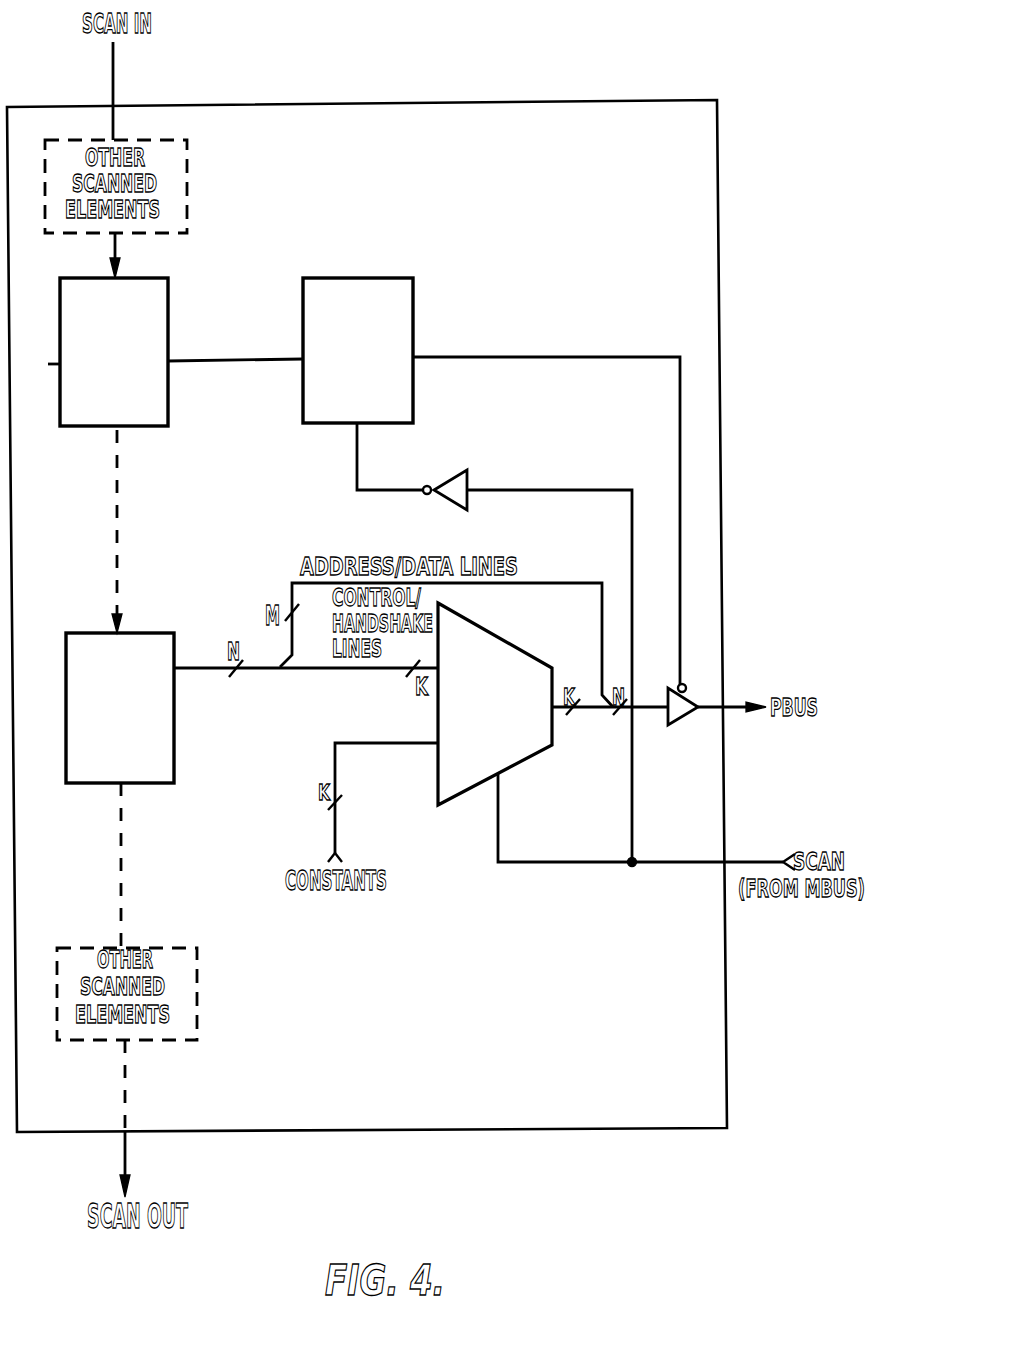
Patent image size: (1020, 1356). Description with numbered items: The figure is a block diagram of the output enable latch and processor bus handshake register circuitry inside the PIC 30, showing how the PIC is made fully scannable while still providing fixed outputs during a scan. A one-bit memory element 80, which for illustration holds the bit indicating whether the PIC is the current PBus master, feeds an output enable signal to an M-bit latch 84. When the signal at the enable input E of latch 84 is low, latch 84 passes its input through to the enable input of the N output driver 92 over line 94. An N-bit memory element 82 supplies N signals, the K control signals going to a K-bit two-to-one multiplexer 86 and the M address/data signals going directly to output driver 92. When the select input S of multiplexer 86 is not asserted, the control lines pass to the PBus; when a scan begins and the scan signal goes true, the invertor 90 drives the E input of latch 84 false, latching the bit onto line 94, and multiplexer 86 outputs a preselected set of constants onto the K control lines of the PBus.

The PIC 30 is at (727, 1080).
The one-bit memory element 80 is at (140, 278).
The N-bit memory element 82 is at (140, 633).
The M-bit latch 84 is at (380, 278).
The K-bit 2-to-1 multiplexer 86 is at (505, 640).
The invertor 90 is at (456, 472).
The N output driver 92 is at (690, 696).
The line 94 is at (612, 357).